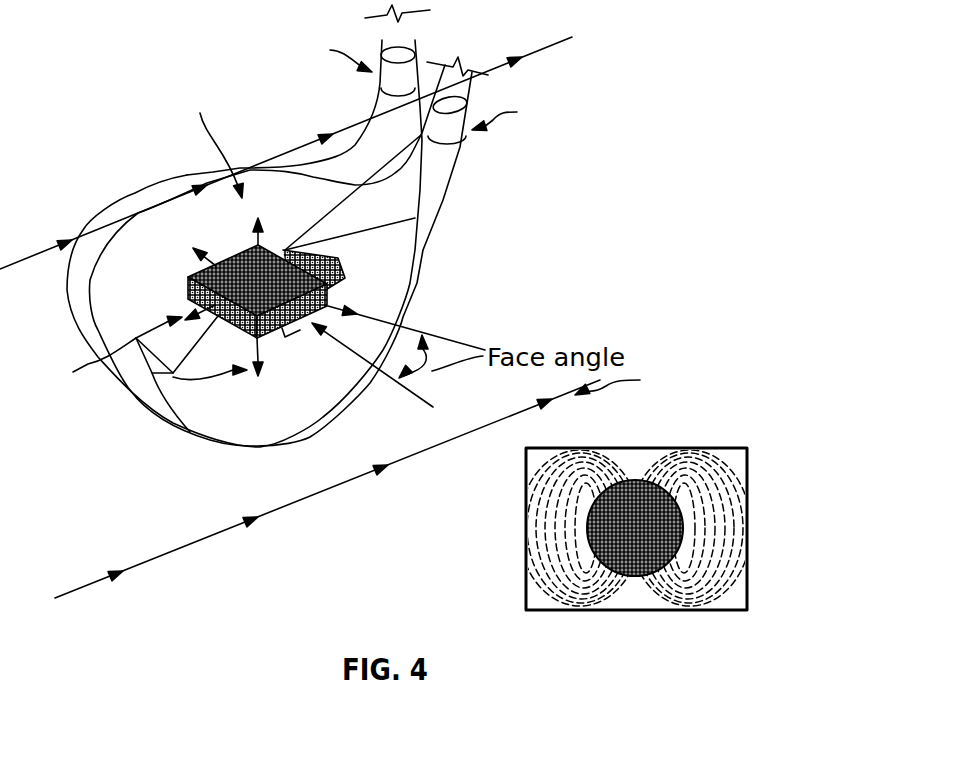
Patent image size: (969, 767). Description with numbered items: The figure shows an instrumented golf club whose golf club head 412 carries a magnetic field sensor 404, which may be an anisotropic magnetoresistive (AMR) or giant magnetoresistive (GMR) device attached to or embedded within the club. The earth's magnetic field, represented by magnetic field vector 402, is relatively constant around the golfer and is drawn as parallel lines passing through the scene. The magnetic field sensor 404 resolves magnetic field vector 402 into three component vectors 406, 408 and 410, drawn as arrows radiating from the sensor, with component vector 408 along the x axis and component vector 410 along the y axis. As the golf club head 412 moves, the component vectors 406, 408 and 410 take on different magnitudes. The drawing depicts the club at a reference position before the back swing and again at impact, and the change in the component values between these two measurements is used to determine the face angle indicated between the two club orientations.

The magnetic field vector 402 is at (150, 572).
The magnetic field sensor 404 is at (188, 277).
The component vector 406 is at (173, 373).
The component vector 408 is at (312, 350).
The component vector 410 is at (103, 352).
The golf club head 412 is at (125, 176).